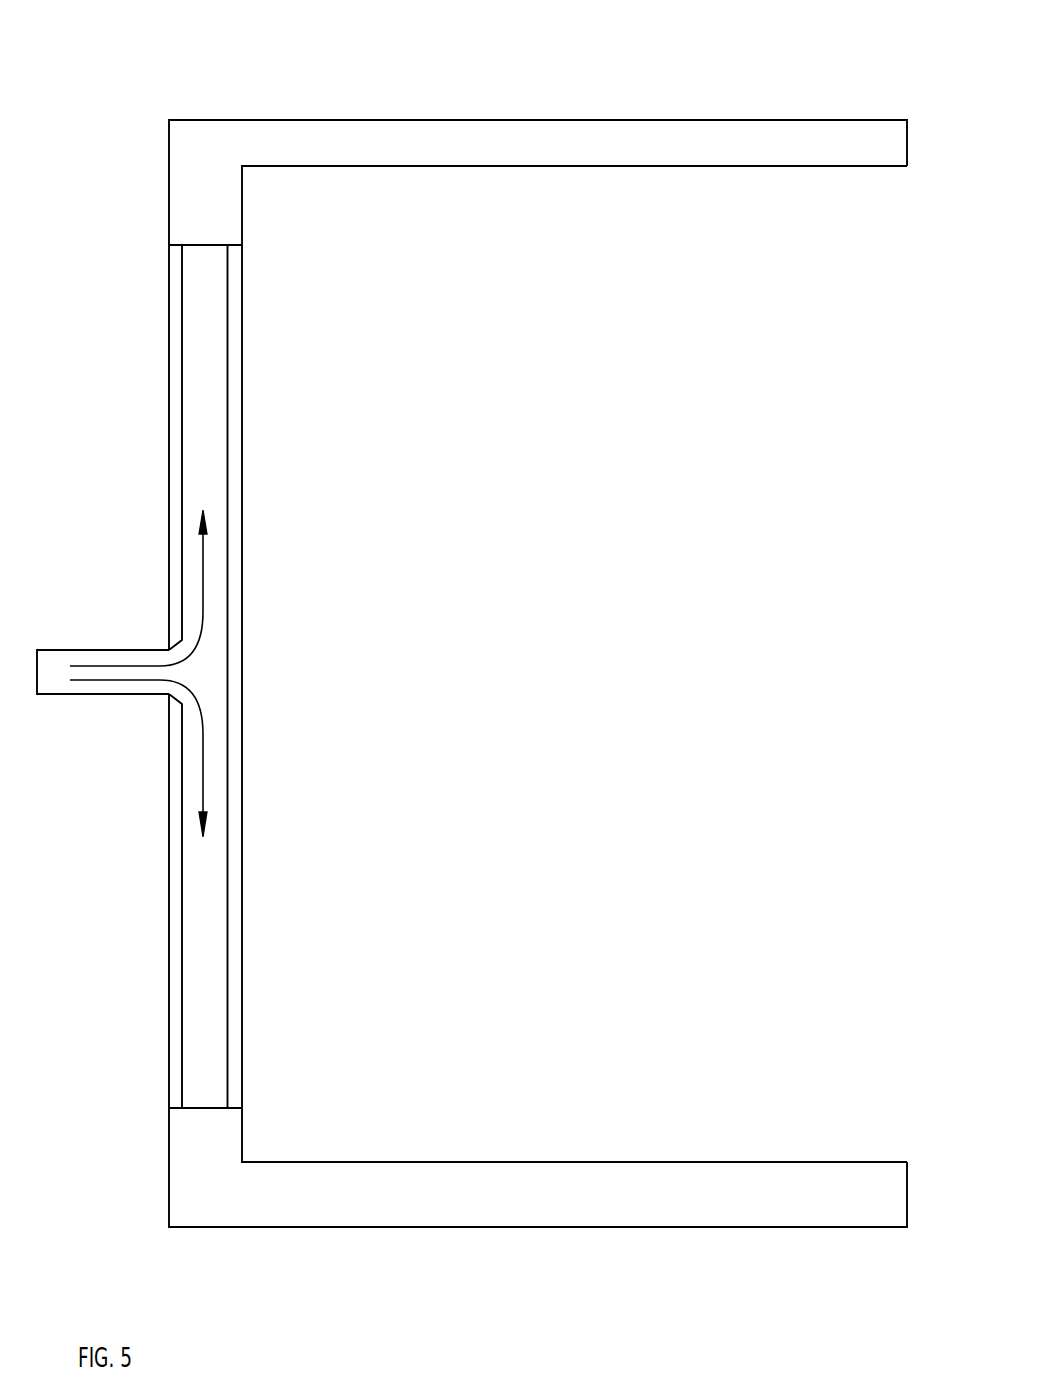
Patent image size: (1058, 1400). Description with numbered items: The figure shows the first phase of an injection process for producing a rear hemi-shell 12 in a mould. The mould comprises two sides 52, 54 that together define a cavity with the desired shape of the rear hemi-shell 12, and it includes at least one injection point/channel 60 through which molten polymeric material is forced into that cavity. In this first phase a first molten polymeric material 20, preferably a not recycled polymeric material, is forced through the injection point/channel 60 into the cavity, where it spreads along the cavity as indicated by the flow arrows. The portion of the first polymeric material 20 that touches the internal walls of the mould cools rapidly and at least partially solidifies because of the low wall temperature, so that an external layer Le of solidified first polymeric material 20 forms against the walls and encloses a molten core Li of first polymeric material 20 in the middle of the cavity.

The rear hemi-shell 12 is at (132, 80).
The side of the mould 52 is at (425, 508).
The side of the mould 54 is at (83, 415).
The injection point/channel 60 is at (107, 694).
The first molten polymeric material 20 is at (203, 613).
The external layer Le is at (234, 423).
The molten core Li is at (212, 467).